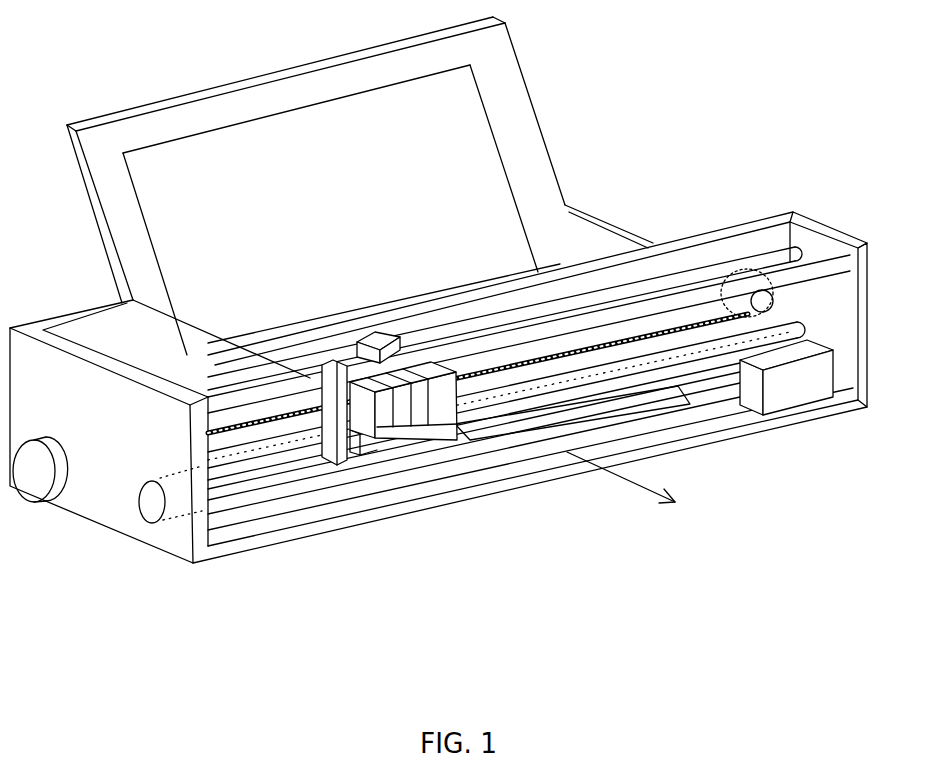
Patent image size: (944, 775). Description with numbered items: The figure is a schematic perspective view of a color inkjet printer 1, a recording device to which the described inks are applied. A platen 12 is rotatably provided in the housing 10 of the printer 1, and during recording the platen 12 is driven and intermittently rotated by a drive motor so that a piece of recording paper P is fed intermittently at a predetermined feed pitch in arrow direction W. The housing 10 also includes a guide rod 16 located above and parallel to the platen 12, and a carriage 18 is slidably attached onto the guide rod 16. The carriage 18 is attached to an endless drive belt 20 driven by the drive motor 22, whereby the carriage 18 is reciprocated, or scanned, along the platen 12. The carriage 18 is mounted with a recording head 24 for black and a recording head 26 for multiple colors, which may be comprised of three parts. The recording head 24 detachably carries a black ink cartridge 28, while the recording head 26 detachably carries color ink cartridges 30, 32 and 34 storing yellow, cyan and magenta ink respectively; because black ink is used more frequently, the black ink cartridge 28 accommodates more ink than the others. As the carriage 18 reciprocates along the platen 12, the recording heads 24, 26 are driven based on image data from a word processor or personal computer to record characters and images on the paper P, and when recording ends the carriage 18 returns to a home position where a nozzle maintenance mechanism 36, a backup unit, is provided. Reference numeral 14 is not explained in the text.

The color inkjet printer 1 is at (341, 31).
The housing 10 is at (108, 510).
The platen 12 is at (155, 523).
The platen knob 14 is at (27, 500).
The guide rod 16 is at (730, 347).
The carriage 18 is at (187, 357).
The endless drive belt 20 is at (755, 287).
The drive motor 22 is at (735, 310).
The recording head for a black color 24 is at (438, 438).
The recording head for multiple colors 26 is at (388, 430).
The black ink cartridge 28 is at (435, 370).
The color ink cartridge 30 is at (387, 437).
The color ink cartridge 32 is at (388, 378).
The color ink cartridge 34 is at (403, 373).
The nozzle maintenance mechanism 36 is at (800, 393).
The recording paper P is at (468, 93).
The arrow direction W is at (639, 497).